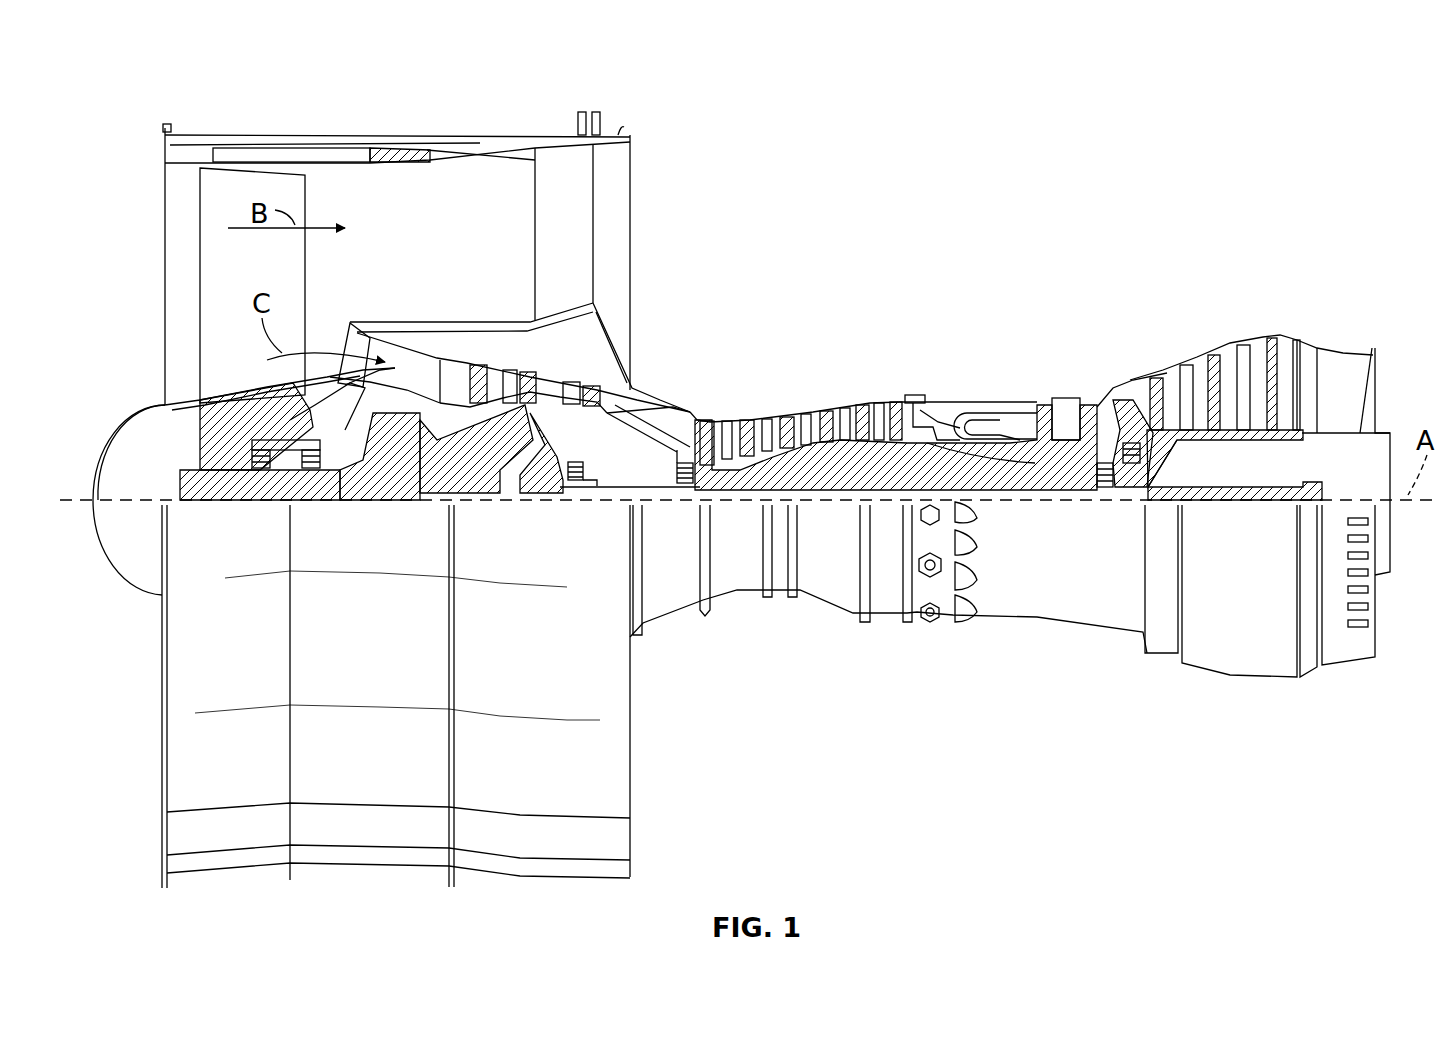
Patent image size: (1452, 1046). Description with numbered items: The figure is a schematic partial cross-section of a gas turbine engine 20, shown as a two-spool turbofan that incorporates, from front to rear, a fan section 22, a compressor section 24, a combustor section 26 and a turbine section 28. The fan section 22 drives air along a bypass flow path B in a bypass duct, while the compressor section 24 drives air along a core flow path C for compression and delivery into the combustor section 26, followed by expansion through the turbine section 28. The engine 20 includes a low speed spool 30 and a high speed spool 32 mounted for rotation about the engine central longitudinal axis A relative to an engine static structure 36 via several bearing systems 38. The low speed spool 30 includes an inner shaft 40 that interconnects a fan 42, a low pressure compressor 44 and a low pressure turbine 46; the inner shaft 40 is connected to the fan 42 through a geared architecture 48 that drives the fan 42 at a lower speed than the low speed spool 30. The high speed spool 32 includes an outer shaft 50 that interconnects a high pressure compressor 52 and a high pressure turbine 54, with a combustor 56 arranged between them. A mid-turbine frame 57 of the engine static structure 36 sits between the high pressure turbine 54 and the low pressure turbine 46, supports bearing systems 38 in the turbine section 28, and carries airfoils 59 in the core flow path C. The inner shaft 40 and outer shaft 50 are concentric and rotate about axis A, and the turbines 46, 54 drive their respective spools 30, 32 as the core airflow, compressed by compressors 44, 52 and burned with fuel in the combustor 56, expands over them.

The gas turbine engine 20 is at (1243, 182).
The fan section 22 is at (350, 122).
The compressor section 24 is at (685, 385).
The combustor section 26 is at (958, 338).
The turbine section 28 is at (1152, 338).
The low speed spool 30 is at (837, 512).
The high speed spool 32 is at (908, 412).
The engine static structure 36 is at (887, 623).
The bearing systems 38 is at (577, 488).
The inner shaft 40 is at (660, 497).
The fan 42 is at (267, 279).
The low pressure compressor 44 is at (527, 383).
The low pressure turbine 46 is at (1227, 362).
The geared architecture 48 is at (405, 480).
The outer shaft 50 is at (1048, 477).
The high pressure compressor 52 is at (817, 417).
The high pressure turbine 54 is at (1063, 397).
The combustor 56 is at (993, 427).
The mid-turbine frame 57 is at (1117, 390).
The airfoils 59 is at (1167, 440).